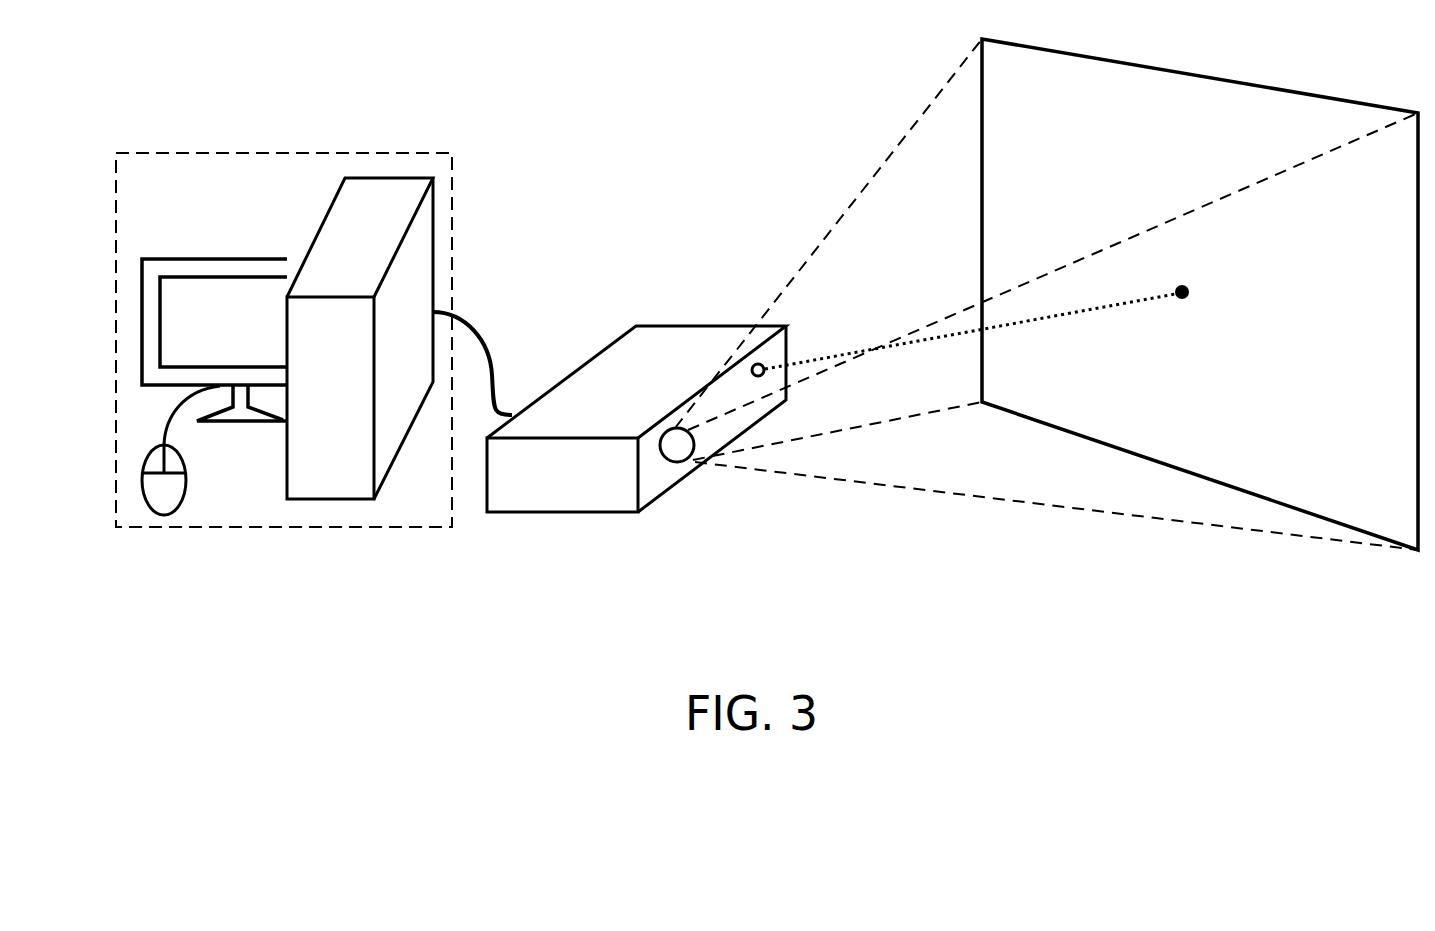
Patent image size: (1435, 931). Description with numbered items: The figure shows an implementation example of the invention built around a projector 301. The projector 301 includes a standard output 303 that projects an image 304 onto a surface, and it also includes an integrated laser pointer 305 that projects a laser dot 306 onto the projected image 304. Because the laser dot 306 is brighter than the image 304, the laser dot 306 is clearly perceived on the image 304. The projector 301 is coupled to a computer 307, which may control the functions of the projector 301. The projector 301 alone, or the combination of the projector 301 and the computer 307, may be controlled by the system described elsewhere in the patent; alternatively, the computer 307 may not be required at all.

The projector 301 is at (502, 513).
The standard output 303 is at (668, 462).
The image 304 is at (995, 410).
The integrated laser pointer 305 is at (758, 363).
The laser dot 306 is at (1180, 294).
The computer 307 is at (217, 152).